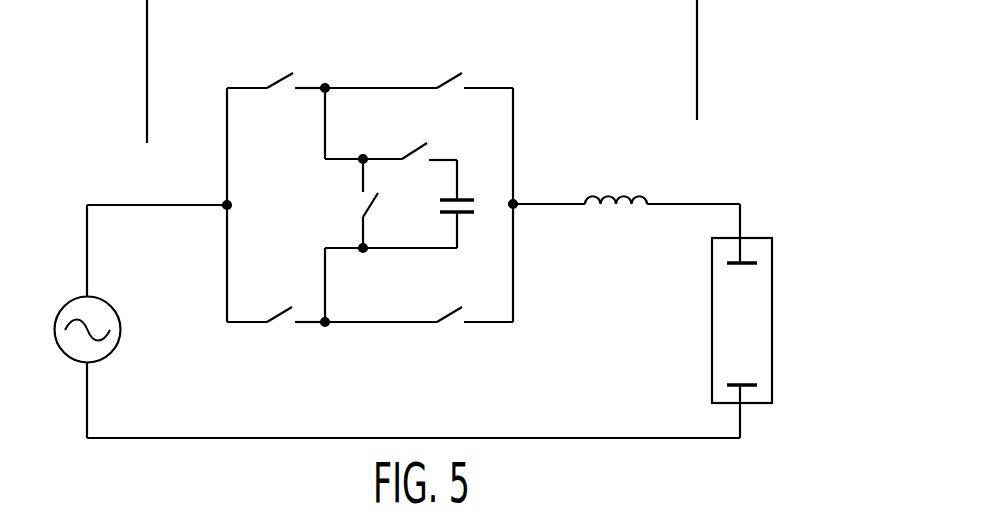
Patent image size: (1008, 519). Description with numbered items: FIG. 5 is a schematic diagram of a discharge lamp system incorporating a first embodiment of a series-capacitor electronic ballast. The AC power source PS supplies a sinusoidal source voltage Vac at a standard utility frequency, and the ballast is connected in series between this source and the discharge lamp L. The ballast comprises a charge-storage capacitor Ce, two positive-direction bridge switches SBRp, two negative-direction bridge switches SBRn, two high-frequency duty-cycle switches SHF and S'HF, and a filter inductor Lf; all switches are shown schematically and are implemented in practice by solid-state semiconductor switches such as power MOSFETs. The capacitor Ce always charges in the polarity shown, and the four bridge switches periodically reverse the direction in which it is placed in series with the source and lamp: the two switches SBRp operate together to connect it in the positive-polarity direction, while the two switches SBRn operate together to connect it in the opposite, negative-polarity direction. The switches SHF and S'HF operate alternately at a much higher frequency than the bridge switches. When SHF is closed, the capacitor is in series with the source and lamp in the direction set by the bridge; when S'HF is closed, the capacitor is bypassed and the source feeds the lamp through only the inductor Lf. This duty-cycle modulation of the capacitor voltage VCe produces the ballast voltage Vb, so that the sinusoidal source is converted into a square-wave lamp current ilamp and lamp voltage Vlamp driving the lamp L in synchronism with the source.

The AC power source PS is at (112, 352).
The source voltage Vac is at (44, 331).
The ballast voltage Vb is at (148, 15).
The positive-direction bridge switch SBRp is at (370, 182).
The negative-direction bridge switch SBRn is at (370, 182).
The high-frequency duty-cycle switch SHF is at (391, 136).
The high-frequency duty-cycle switch S'HF is at (391, 203).
The charge-storage capacitor Ce is at (465, 204).
The capacitor voltage VCe is at (431, 204).
The filter inductor Lf is at (626, 218).
The lamp current ilamp is at (740, 180).
The discharge lamp L is at (729, 321).
The lamp voltage Vlamp is at (807, 322).